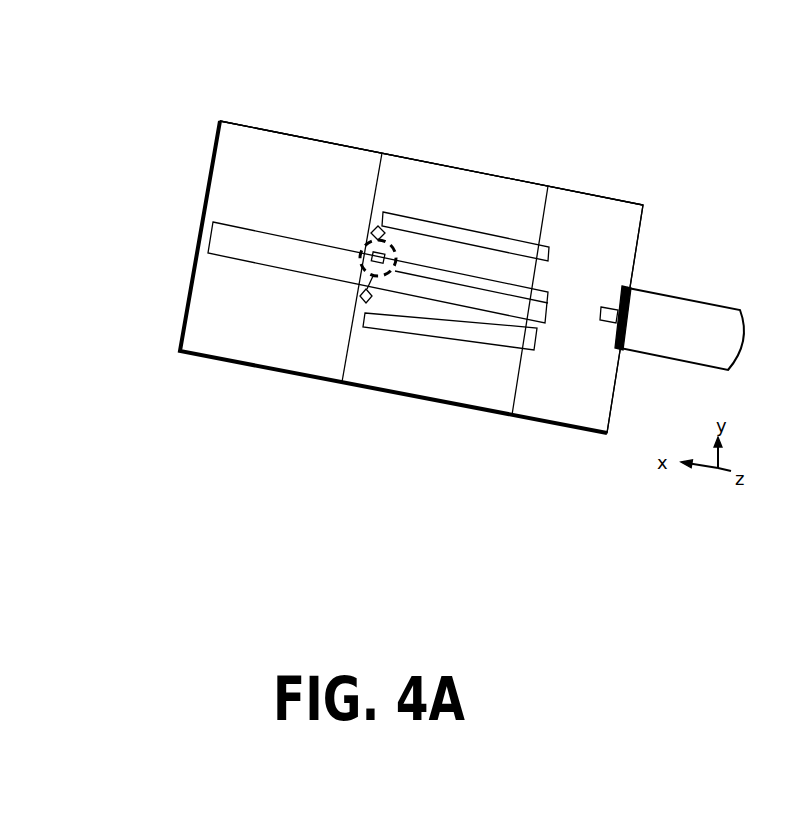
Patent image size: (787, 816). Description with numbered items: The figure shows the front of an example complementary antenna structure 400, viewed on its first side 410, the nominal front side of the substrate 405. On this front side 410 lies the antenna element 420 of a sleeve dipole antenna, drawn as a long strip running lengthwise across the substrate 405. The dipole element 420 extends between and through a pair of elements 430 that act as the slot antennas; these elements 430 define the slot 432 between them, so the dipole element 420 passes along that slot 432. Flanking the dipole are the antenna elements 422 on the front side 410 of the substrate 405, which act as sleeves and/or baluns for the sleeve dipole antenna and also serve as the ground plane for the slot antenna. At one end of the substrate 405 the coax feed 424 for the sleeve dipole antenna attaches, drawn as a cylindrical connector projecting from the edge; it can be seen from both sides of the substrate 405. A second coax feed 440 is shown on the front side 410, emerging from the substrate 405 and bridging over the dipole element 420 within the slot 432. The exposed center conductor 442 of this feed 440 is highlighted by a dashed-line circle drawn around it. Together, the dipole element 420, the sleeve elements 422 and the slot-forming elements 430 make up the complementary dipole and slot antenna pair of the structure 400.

The complementary antenna structure 400 is at (243, 420).
The substrate 405 is at (260, 132).
The first side 410 is at (236, 190).
The antenna element 420 is at (260, 259).
The antenna elements 422 is at (500, 205).
The coax feed 424 is at (650, 300).
The pair of elements 430 is at (503, 317).
The slot 432 is at (553, 284).
The coax feed 440 is at (350, 301).
The exposed center conductor 442 is at (372, 230).